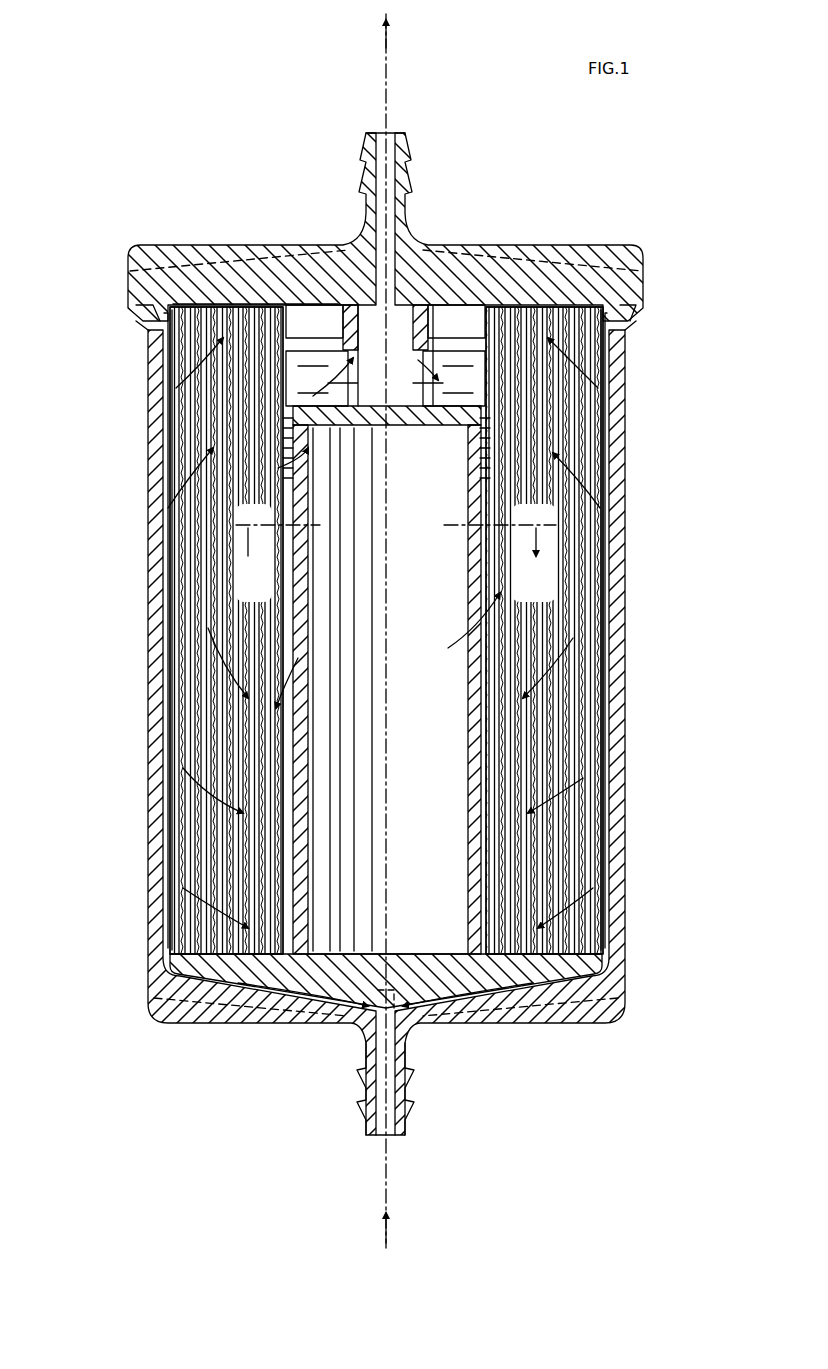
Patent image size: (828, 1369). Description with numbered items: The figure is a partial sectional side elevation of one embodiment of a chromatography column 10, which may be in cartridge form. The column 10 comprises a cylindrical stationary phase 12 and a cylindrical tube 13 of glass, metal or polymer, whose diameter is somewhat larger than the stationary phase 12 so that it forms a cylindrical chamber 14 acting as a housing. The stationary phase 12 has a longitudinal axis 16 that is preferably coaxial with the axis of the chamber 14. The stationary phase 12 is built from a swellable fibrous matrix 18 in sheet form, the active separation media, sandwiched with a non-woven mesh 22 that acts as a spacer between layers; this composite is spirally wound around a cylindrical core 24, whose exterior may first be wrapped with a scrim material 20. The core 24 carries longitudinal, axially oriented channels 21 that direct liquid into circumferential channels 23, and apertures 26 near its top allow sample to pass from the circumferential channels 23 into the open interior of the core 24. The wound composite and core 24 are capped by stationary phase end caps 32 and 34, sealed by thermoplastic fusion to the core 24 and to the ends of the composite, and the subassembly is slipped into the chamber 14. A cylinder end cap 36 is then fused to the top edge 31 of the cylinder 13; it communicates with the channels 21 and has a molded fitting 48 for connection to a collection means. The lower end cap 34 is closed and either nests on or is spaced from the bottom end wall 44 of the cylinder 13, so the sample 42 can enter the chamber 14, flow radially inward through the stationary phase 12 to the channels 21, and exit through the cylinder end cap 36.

The column 10 is at (660, 398).
The cylindrical stationary phase 12 is at (590, 726).
The cylindrical tube 13 is at (612, 578).
The cylindrical chamber 14 is at (200, 564).
The longitudinal axis 16 is at (380, 82).
The swellable fibrous matrix 18 is at (600, 466).
The scrim material 20 is at (306, 898).
The longitudinal and axially oriented channels 21 is at (302, 746).
The non-woven mesh 22 is at (180, 454).
The circumferential channels 23 is at (318, 394).
The cylindrical core 24 is at (306, 768).
The apertures 26 is at (430, 380).
The top edge 31 is at (128, 262).
The stationary phase end cap 32 is at (222, 290).
The stationary phase end cap 34 is at (222, 960).
The cylinder end cap 36 is at (520, 268).
The fluid or sample 42 is at (380, 28).
The bottom end wall 44 is at (603, 992).
The fitting 48 is at (398, 172).